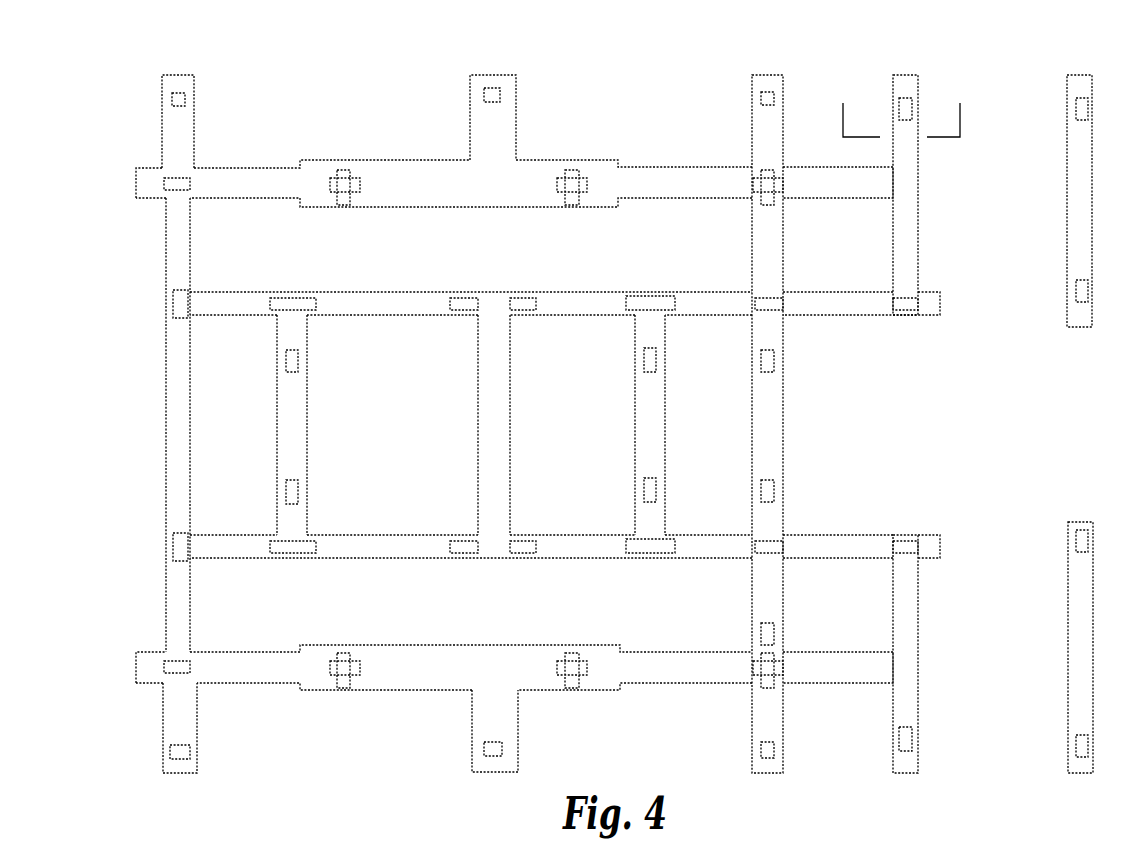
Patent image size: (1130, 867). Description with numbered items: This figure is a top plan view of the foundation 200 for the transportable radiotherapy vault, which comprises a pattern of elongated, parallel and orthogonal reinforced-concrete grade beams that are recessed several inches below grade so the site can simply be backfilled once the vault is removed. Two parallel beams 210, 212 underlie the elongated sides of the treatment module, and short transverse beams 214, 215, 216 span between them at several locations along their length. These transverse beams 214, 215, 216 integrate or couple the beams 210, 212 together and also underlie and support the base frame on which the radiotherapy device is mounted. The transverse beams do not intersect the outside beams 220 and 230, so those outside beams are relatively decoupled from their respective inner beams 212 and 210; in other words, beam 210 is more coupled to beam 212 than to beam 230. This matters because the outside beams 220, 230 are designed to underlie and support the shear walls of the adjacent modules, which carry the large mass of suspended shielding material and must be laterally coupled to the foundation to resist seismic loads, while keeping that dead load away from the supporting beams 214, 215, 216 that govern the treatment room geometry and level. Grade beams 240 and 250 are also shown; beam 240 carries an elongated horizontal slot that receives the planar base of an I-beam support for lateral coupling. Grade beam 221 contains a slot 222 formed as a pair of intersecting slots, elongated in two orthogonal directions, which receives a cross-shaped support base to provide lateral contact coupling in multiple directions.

The foundation 200 is at (139, 75).
The beam 210 is at (848, 534).
The beam 212 is at (836, 316).
The short transverse beam 214 is at (635, 432).
The short transverse beam 215 is at (480, 452).
The short transverse beam 216 is at (307, 440).
The outside beam 220 is at (652, 167).
The grade beam 221 is at (558, 160).
The slot 222 is at (572, 201).
The outside beam 230 is at (663, 684).
The grade beam 240 is at (918, 222).
The grade beam 250 is at (918, 592).